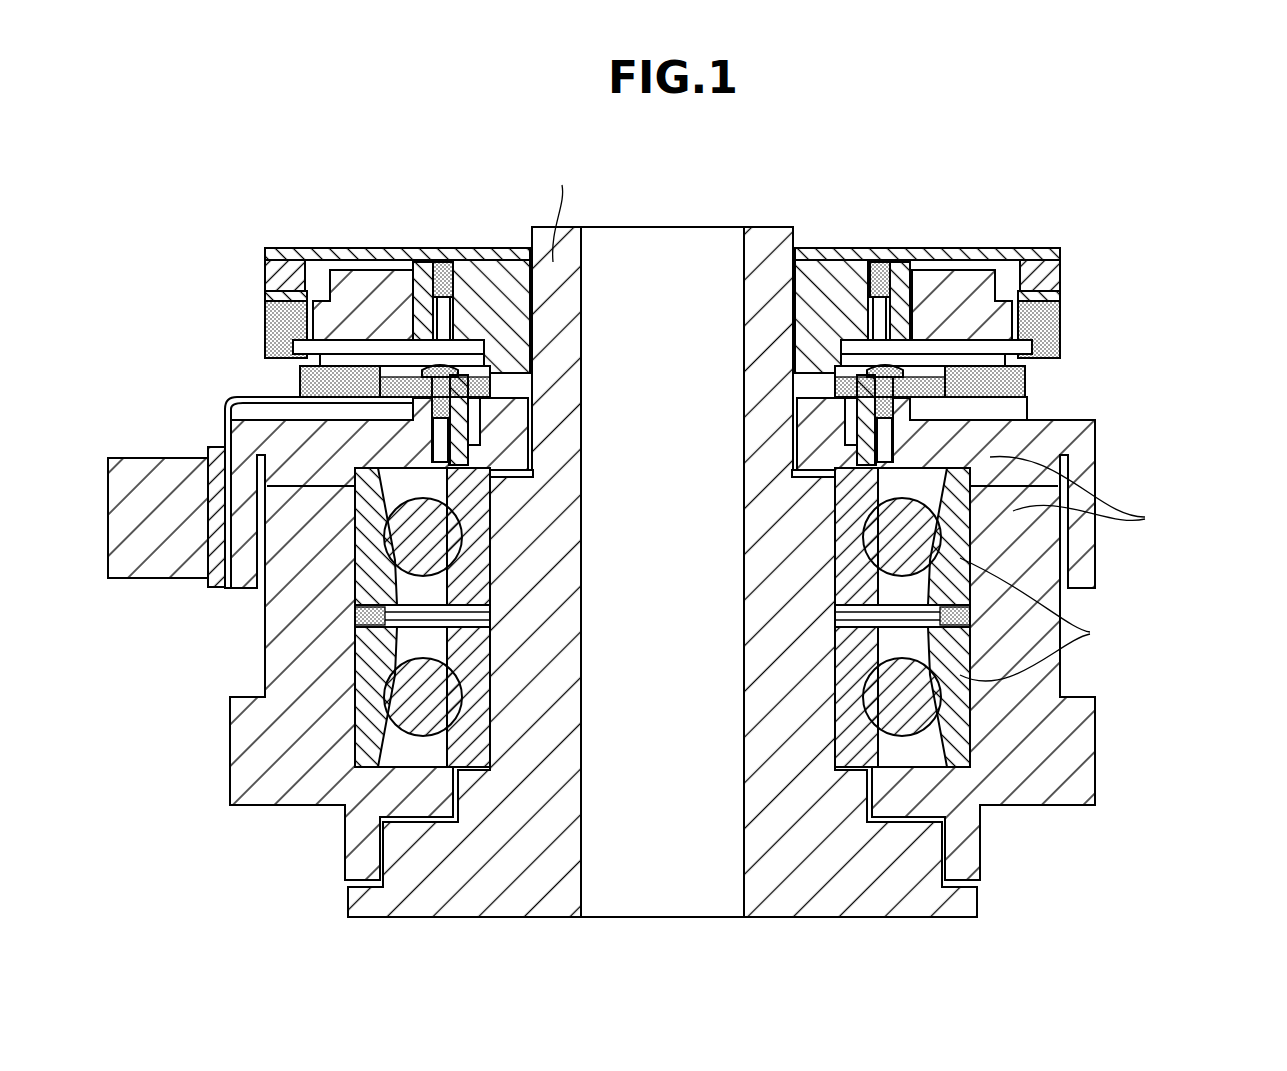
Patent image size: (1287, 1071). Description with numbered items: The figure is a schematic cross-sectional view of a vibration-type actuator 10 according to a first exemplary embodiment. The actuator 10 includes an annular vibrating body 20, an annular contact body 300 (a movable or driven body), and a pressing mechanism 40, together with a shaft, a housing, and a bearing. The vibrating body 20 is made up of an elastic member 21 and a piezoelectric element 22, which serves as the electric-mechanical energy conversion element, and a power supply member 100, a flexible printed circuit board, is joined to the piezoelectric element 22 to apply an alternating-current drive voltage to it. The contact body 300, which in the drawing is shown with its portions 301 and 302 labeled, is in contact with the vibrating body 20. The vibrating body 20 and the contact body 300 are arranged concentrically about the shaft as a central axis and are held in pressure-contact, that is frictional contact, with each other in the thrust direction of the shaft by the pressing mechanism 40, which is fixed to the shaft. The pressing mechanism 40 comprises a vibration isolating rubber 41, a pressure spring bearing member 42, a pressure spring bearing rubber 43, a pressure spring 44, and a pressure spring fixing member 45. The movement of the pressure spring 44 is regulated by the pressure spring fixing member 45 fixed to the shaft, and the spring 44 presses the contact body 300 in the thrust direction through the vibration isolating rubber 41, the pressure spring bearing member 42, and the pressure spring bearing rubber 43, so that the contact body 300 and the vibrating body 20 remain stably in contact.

The vibration-type actuator 10 is at (330, 188).
The power supply member 100 is at (223, 413).
The contact body 300 is at (305, 297).
The yoke plate 301 is at (270, 297).
The magnet 302 is at (276, 318).
The vibrating body 20 is at (292, 397).
The elastic member 21 is at (296, 346).
The piezoelectric element 22 is at (300, 381).
The pressing mechanism 40 is at (976, 274).
The vibration isolating rubber 41 is at (1079, 249).
The pressure spring bearing member 42 is at (1033, 262).
The pressure spring bearing rubber 43 is at (1010, 250).
The pressure spring 44 is at (920, 250).
The pressure spring fixing member 45 is at (825, 288).